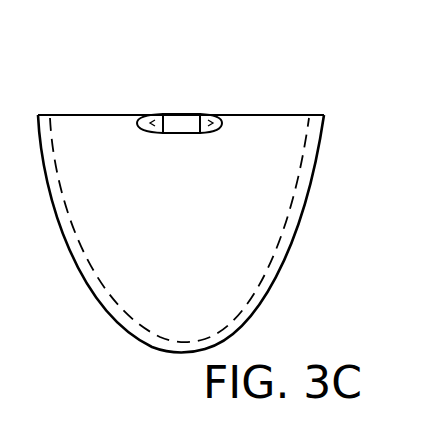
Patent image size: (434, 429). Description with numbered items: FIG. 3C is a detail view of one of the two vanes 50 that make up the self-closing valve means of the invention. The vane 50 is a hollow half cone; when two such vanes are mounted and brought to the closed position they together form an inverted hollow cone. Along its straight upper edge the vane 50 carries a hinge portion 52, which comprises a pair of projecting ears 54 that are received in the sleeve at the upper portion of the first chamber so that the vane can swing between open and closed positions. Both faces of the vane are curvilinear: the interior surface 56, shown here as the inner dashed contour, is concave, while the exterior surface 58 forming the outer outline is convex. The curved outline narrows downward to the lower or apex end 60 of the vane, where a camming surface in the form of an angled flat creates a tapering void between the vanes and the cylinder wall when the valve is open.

The vane 50 is at (100, 113).
The hinge portion 52 is at (187, 100).
The projecting ears 54 is at (152, 118).
The interior surface 56 is at (283, 233).
The exterior surface 58 is at (311, 198).
The apex end 60 is at (177, 350).